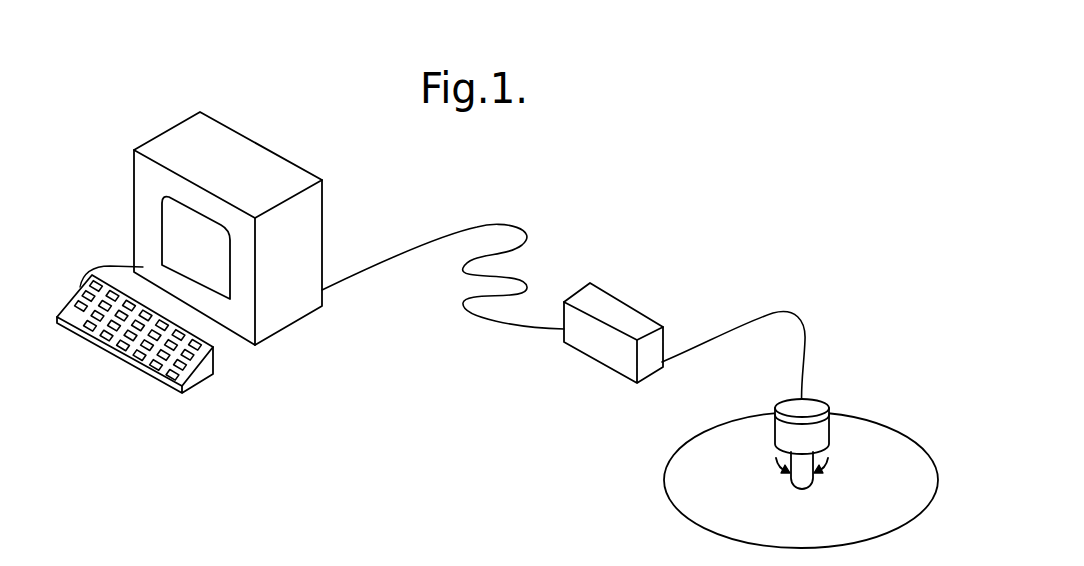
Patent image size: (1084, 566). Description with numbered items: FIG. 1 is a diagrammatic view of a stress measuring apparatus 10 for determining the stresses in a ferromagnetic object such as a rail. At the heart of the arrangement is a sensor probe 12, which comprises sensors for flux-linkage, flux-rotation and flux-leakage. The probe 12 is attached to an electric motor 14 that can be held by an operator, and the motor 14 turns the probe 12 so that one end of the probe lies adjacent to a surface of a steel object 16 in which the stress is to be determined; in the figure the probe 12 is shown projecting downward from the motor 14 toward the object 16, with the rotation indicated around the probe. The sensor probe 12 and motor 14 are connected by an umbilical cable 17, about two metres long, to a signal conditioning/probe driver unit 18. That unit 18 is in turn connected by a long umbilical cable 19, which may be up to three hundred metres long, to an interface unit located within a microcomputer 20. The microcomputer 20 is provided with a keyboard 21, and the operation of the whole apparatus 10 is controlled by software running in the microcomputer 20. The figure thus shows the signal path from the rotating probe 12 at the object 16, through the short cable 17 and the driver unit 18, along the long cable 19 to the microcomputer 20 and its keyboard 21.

The stress measuring apparatus 10 is at (703, 250).
The sensor probe 12 is at (807, 480).
The electric motor 14 is at (815, 430).
The steel object 16 is at (683, 455).
The umbilical cable 17 is at (770, 313).
The signal conditioning/probe driver unit 18 is at (647, 327).
The long umbilical cable 19 is at (527, 236).
The microcomputer 20 is at (309, 231).
The keyboard 21 is at (157, 358).